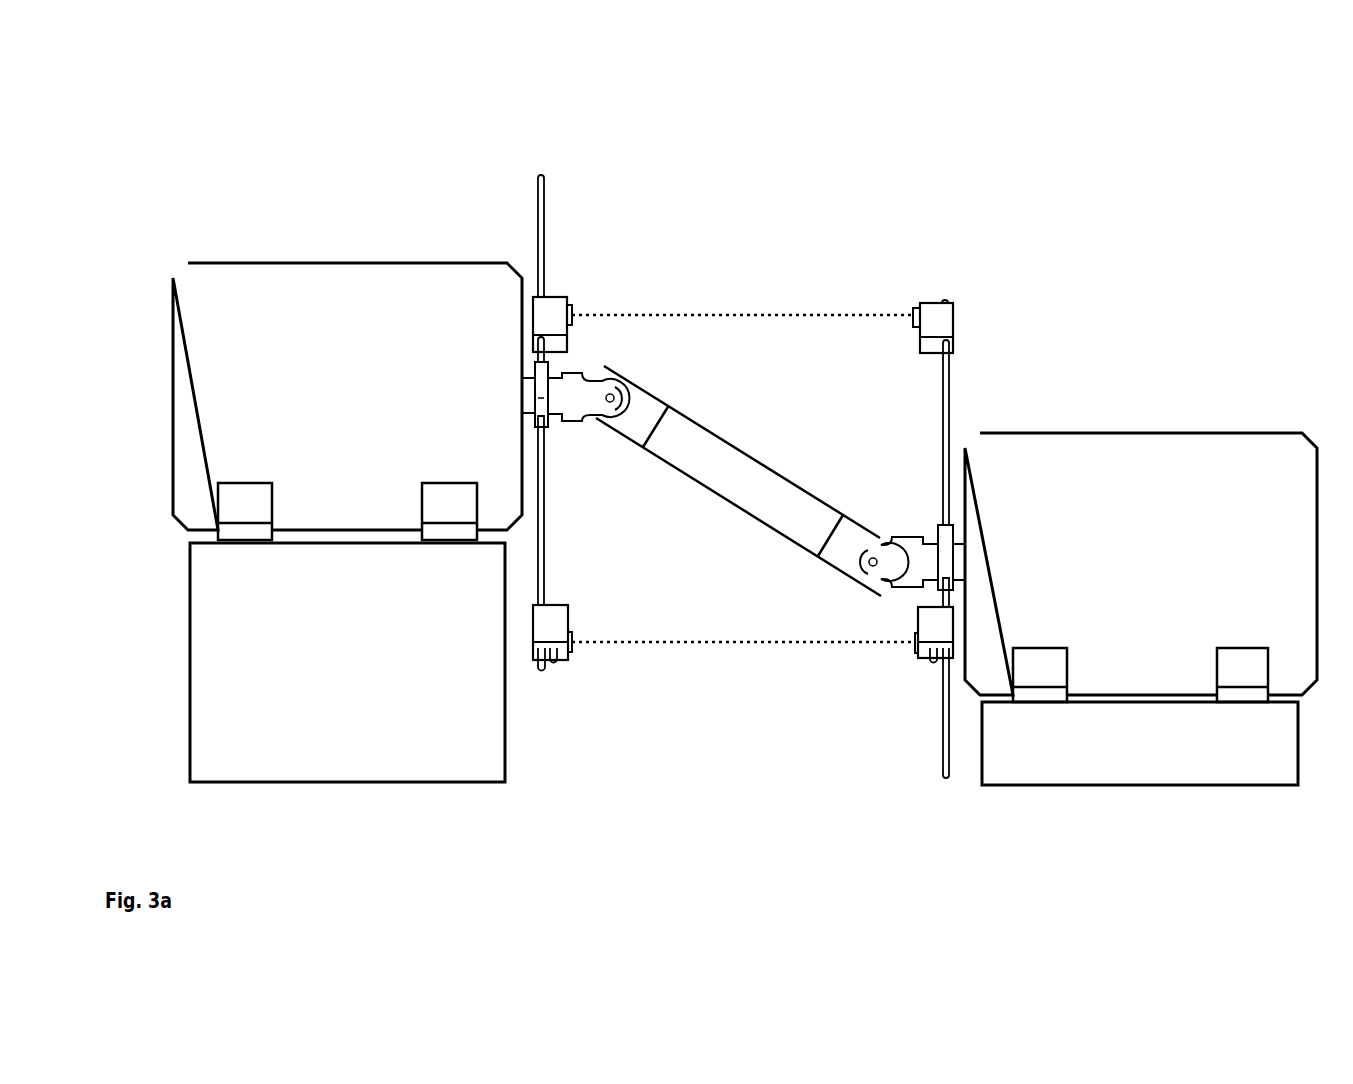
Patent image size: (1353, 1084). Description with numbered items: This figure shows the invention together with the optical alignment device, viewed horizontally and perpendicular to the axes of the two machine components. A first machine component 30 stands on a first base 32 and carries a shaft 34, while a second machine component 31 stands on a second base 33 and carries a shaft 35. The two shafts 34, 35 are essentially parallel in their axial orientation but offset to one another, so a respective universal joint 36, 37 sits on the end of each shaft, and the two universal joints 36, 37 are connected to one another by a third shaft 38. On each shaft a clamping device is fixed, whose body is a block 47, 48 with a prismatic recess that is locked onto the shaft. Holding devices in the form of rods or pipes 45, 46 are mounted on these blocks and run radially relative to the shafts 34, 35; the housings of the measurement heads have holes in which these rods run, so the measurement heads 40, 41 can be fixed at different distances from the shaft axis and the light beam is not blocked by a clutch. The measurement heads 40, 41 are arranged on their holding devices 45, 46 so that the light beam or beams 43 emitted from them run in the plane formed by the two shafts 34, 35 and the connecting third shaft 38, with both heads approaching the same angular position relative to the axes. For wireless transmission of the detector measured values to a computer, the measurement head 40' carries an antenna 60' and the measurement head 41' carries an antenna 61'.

The first machine component 30 is at (340, 283).
The second machine component 31 is at (1227, 463).
The first base 32 is at (341, 754).
The second base 33 is at (1118, 757).
The shaft 34 is at (525, 392).
The shaft 35 is at (960, 560).
The universal joint 36 is at (590, 388).
The universal joint 37 is at (892, 555).
The third shaft 38 is at (772, 485).
The measurement head 40 is at (563, 223).
The measurement head 40' is at (567, 714).
The measurement head 41 is at (952, 223).
The measurement head 41' is at (888, 715).
The light beam 43 is at (680, 310).
The holding device 45 is at (542, 517).
The holding device 46 is at (948, 420).
The block 47 is at (540, 402).
The block 48 is at (950, 528).
The antenna 60' is at (525, 735).
The antenna 61' is at (913, 735).